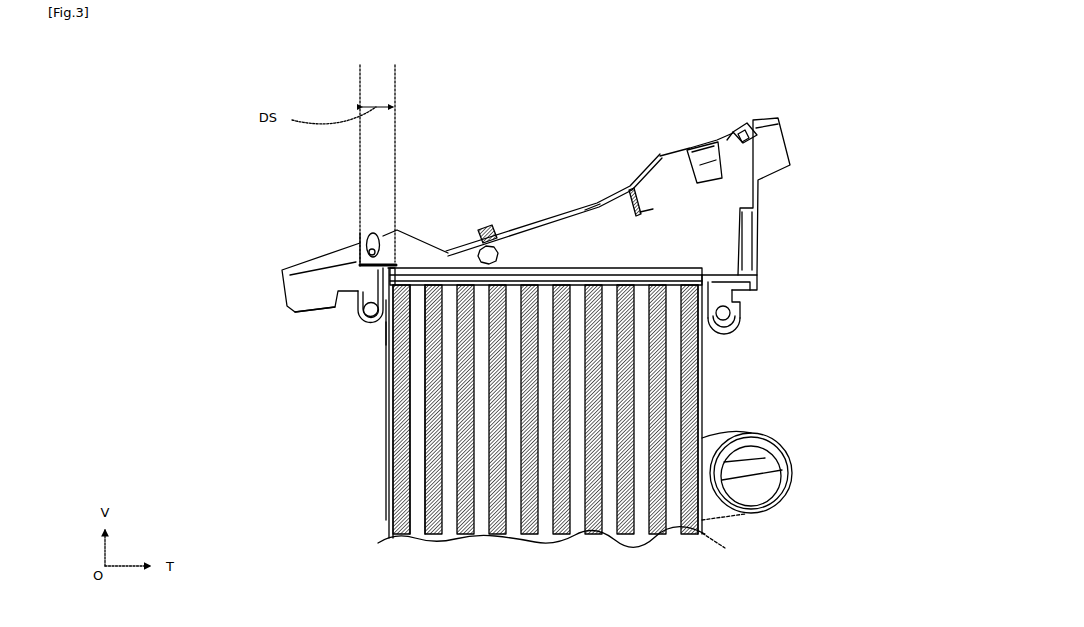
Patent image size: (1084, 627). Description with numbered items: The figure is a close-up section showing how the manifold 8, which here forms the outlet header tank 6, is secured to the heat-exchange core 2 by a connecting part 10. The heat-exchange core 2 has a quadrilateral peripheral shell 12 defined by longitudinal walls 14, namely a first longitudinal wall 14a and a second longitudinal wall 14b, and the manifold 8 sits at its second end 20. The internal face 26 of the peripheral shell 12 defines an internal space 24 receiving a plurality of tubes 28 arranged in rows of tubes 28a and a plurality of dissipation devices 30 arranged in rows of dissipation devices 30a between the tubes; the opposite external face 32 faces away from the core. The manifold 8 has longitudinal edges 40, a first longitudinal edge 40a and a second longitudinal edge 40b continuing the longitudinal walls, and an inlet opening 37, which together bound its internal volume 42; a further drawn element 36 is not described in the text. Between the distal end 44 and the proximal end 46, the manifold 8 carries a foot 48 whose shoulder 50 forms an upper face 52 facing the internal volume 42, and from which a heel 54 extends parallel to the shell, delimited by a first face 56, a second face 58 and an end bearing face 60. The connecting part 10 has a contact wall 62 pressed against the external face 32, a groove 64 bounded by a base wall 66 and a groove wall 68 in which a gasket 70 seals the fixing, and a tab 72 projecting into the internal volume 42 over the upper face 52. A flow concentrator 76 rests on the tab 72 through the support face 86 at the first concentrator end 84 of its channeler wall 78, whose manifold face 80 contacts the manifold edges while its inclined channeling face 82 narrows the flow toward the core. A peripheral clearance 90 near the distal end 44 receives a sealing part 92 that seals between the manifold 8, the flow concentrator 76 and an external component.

The heat-exchange core 2 is at (571, 364).
The outlet header tank 6 is at (776, 174).
The manifold 8 is at (764, 196).
The connecting part 10 is at (722, 330).
The peripheral shell 12 is at (388, 516).
The longitudinal walls 14 is at (571, 403).
The first longitudinal wall 14a is at (390, 500).
The second longitudinal wall 14b is at (706, 388).
The second end 20 is at (578, 262).
The internal space 24 is at (573, 500).
The internal face 26 is at (408, 525).
The plurality of tubes 28 is at (801, 539).
The rows of tubes 28a is at (702, 527).
The plurality of dissipation devices 30 is at (817, 472).
The rows of dissipation devices 30a is at (780, 427).
The external face 32 is at (390, 483).
The port opening 36 is at (780, 500).
The inlet opening 37 is at (340, 252).
The longitudinal edges 40 is at (524, 296).
The first longitudinal edge 40a is at (329, 296).
The second longitudinal edge 40b is at (791, 286).
The internal volume 42 is at (595, 242).
The distal end 44 is at (350, 245).
The proximal end 46 is at (312, 312).
The foot 48 is at (393, 240).
The shoulder 50 is at (712, 283).
The upper face 52 is at (720, 262).
The heel 54 is at (722, 297).
The first face 56 is at (714, 292).
The second face 58 is at (739, 314).
The bearing face 60 is at (366, 314).
The contact wall 62 is at (385, 290).
The groove 64 is at (390, 345).
The base wall 66 is at (380, 322).
The groove wall 68 is at (360, 272).
The gasket 70 is at (385, 262).
The tab 72 is at (690, 222).
The flow concentrator 76 is at (727, 148).
The channeler wall 78 is at (697, 262).
The manifold face 80 is at (757, 148).
The channeling face 82 is at (625, 262).
The first concentrator end 84 is at (737, 257).
The support face 86 is at (756, 254).
The peripheral clearance 90 is at (738, 127).
The sealing part 92 is at (750, 128).